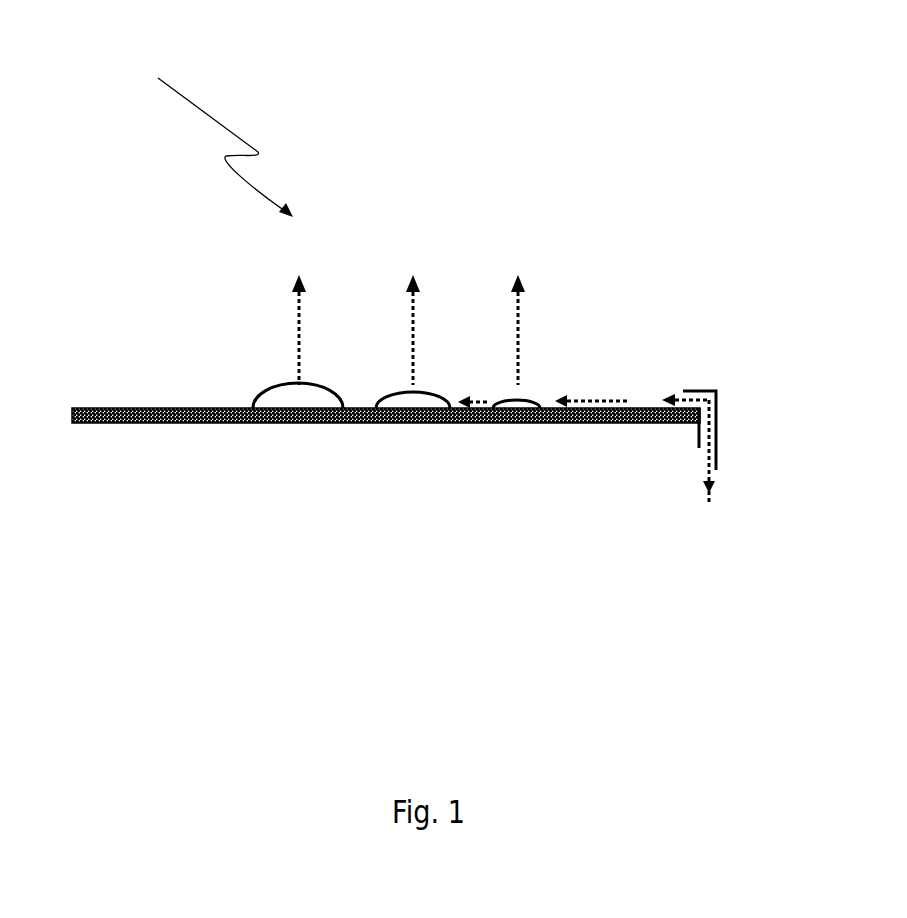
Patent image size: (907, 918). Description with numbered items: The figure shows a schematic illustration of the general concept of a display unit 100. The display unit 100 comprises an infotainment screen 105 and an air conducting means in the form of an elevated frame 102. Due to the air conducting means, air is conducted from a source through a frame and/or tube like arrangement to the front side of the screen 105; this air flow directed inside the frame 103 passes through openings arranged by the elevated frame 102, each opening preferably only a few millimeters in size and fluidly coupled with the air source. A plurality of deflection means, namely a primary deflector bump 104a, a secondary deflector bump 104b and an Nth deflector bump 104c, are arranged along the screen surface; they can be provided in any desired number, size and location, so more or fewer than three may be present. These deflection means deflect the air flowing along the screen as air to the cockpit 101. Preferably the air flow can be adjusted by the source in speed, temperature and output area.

The display unit 100 is at (201, 129).
The air to cockpit 101 is at (518, 330).
The elevated frame 102 is at (708, 389).
The air flow directed inside frame 103 is at (713, 487).
The primary deflector bump 104a is at (528, 403).
The secondary deflector bump 104b is at (387, 395).
The Nth deflector bump 104c is at (258, 398).
The infotainment screen 105 is at (594, 416).